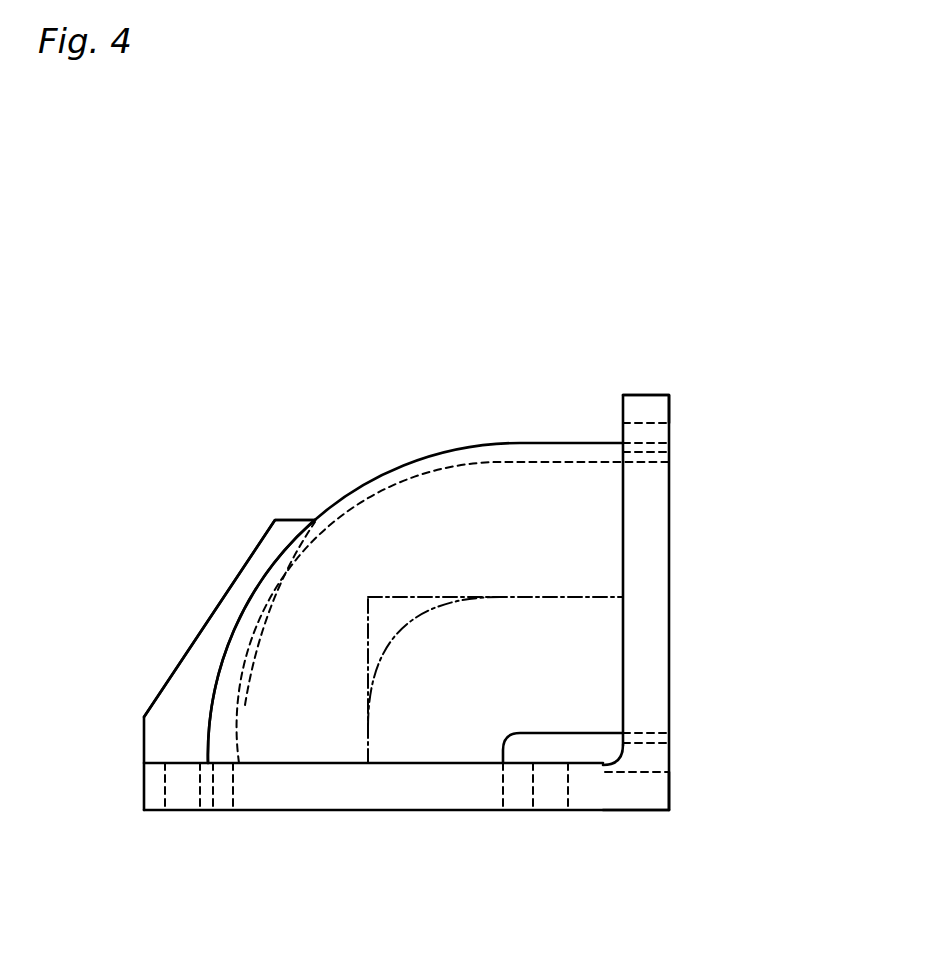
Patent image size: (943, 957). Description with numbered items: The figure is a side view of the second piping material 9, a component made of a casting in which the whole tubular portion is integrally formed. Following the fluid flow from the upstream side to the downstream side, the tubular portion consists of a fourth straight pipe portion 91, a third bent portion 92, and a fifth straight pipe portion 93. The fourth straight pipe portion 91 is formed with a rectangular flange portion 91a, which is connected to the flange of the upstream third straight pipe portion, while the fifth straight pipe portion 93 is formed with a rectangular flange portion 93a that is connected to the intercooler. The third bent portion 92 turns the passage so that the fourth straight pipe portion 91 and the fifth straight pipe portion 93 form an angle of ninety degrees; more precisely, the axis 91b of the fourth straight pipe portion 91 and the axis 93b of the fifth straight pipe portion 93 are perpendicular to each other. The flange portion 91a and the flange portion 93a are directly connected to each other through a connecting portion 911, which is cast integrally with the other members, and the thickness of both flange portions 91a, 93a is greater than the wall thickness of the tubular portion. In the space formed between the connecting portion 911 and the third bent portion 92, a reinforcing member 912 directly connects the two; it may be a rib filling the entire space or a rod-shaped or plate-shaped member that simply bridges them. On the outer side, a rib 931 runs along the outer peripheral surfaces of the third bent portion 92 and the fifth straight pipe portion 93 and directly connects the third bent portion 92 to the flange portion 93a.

The second piping material 9 is at (546, 360).
The fourth straight pipe portion 91 is at (588, 478).
The flange portion 91a is at (657, 413).
The axis 91b is at (465, 597).
The third bent portion 92 is at (393, 528).
The fifth straight pipe portion 93 is at (277, 707).
The flange portion 93a is at (303, 785).
The axis 93b is at (367, 698).
The rib 931 is at (198, 643).
The connecting portion 911 is at (633, 788).
The reinforcing member 912 is at (575, 750).